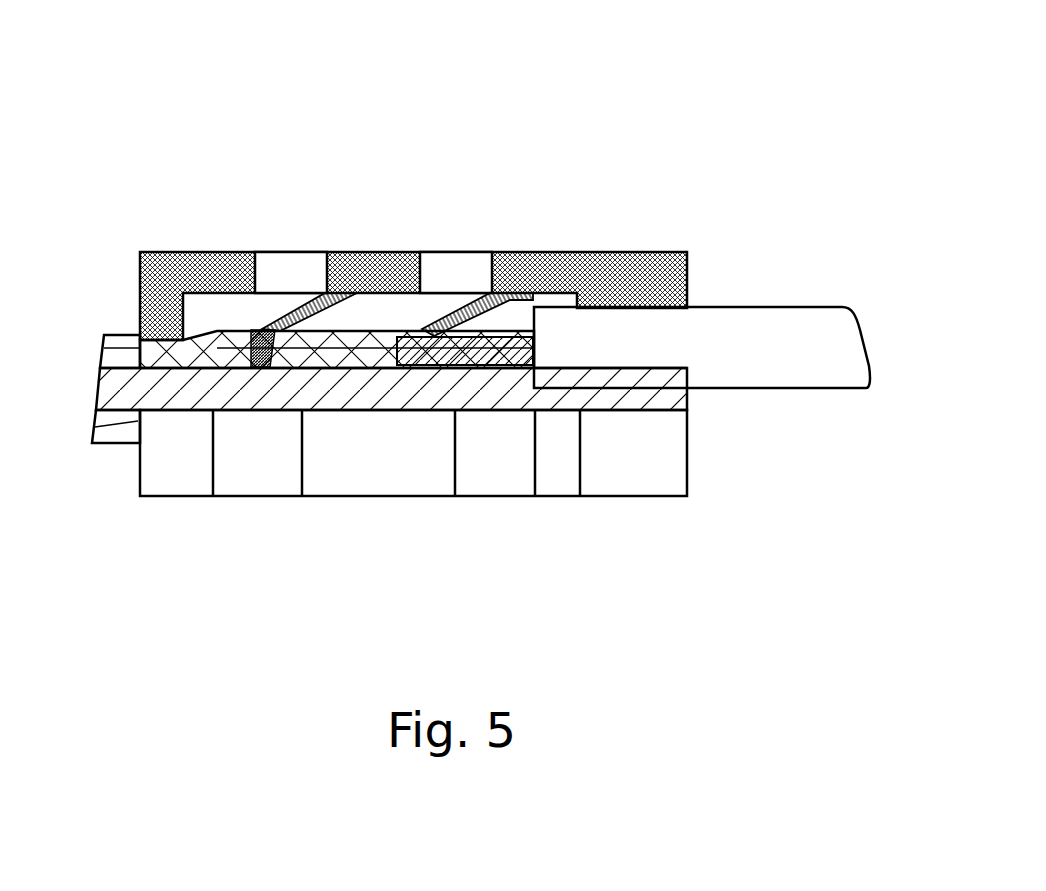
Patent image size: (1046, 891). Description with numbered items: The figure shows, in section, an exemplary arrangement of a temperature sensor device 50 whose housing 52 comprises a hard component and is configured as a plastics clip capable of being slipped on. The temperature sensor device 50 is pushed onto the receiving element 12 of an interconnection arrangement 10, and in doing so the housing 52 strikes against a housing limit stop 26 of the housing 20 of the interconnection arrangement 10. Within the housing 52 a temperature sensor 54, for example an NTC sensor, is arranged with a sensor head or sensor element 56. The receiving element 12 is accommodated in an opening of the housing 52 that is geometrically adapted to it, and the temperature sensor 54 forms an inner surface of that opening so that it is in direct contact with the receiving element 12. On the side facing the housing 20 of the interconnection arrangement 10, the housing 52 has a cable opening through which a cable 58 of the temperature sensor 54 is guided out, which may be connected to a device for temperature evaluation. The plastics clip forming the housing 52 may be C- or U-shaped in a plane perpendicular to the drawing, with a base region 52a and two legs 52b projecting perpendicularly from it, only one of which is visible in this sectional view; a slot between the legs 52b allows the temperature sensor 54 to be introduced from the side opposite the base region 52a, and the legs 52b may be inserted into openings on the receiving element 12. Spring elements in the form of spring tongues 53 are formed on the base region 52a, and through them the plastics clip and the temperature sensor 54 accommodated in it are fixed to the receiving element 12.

The interconnection arrangement 10 is at (67, 422).
The receiving element 12 is at (135, 390).
The housing of the interconnection arrangement 20 is at (118, 352).
The housing limit stop 26 is at (138, 345).
The temperature sensor device 50 is at (733, 82).
The housing 52 is at (413, 343).
The base region 52a is at (592, 252).
The legs 52b is at (510, 473).
The spring tongues 53 is at (293, 307).
The temperature sensor 54 is at (340, 358).
The sensor element 56 is at (253, 368).
The cable 58 is at (797, 363).